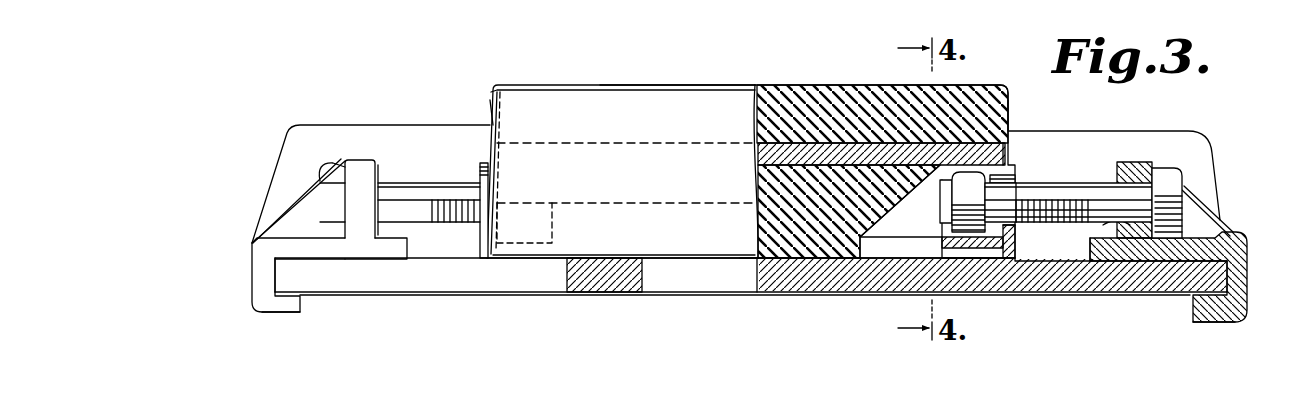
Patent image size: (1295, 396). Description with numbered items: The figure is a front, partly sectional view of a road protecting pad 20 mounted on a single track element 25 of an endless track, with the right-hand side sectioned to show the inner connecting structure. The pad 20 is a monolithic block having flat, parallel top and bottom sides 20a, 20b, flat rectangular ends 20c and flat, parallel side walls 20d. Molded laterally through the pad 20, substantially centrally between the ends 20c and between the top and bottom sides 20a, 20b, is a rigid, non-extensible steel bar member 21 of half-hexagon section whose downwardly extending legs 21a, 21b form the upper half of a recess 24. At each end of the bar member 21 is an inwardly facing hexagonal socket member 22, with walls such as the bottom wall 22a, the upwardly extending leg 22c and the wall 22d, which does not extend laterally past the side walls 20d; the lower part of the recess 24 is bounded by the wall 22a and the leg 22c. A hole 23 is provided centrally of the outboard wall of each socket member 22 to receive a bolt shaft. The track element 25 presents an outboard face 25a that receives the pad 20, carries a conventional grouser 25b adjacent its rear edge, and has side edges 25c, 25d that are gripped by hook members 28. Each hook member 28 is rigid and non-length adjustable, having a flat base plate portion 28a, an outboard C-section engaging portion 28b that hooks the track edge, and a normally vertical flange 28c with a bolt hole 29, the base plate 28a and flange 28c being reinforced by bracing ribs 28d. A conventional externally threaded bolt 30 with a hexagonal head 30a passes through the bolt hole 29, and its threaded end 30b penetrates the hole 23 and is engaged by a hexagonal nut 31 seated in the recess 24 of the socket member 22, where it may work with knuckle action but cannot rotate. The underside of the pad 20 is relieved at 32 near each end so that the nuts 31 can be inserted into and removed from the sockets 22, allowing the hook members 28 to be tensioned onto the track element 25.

The pad 20 is at (492, 85).
The top side 20a is at (810, 86).
The bottom side 20b is at (751, 263).
The end 20c is at (655, 98).
The side wall 20d is at (491, 109).
The bar member 21 is at (754, 159).
The leg 21a is at (938, 176).
The leg 21b is at (561, 160).
The socket member 22 is at (553, 222).
The wall 22a is at (949, 252).
The leg 22c is at (541, 232).
The wall 22d is at (1013, 250).
The hole 23 is at (998, 182).
The recess 24 is at (940, 231).
The track element 25 is at (722, 294).
The outboard face 25a is at (689, 259).
The grouser 25b is at (388, 118).
The side edge 25c is at (276, 276).
The side edge 25d is at (1229, 290).
The hook member 28 is at (249, 249).
The base plate portion 28a is at (367, 250).
The C-section engaging portion 28b is at (252, 298).
The flange 28c is at (390, 158).
The bracing rib 28d is at (277, 226).
The bolt hole 29 is at (1102, 228).
The bolt 30 is at (432, 223).
The head 30a is at (336, 142).
The threaded end 30b is at (921, 197).
The nut 31 is at (977, 233).
The relief 32 is at (858, 244).